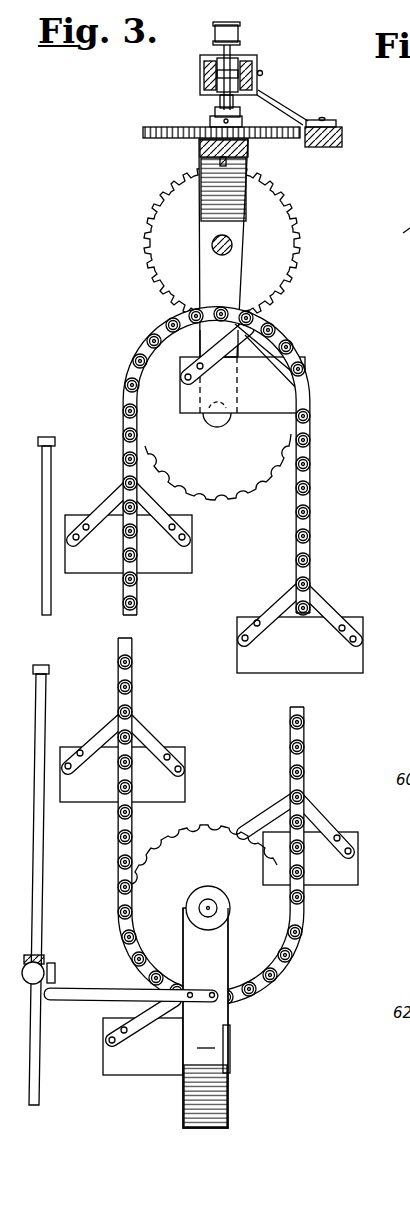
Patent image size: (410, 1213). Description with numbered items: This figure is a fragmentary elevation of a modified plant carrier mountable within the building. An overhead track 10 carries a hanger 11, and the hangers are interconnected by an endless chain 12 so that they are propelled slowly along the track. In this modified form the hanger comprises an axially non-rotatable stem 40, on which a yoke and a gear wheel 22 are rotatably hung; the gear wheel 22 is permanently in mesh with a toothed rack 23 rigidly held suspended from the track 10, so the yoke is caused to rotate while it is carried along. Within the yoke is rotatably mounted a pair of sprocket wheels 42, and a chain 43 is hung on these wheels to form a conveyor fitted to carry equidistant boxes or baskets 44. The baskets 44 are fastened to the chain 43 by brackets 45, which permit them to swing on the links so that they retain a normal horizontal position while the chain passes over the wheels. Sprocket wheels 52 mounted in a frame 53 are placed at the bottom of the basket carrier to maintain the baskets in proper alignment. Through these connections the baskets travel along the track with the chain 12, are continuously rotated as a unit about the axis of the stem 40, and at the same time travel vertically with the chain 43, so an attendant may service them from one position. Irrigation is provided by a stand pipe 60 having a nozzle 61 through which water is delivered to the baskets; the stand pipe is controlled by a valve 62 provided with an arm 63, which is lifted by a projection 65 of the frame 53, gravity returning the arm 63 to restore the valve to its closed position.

The track 10 is at (204, 76).
The hanger 11 is at (213, 68).
The endless chain 12 is at (232, 37).
The gear wheel 22 is at (268, 139).
The toothed rack 23 is at (343, 148).
The stem 40 is at (222, 100).
The sprocket wheel 42 is at (250, 482).
The chain 43 is at (318, 419).
The basket 44 is at (365, 652).
The bracket 45 is at (162, 509).
The sprocket wheel 52 is at (270, 992).
The frame 53 is at (229, 1115).
The stand pipe 60 is at (45, 881).
The nozzle 61 is at (53, 462).
The valve 62 is at (40, 968).
The arm 63 is at (56, 982).
The projection 65 is at (70, 1002).